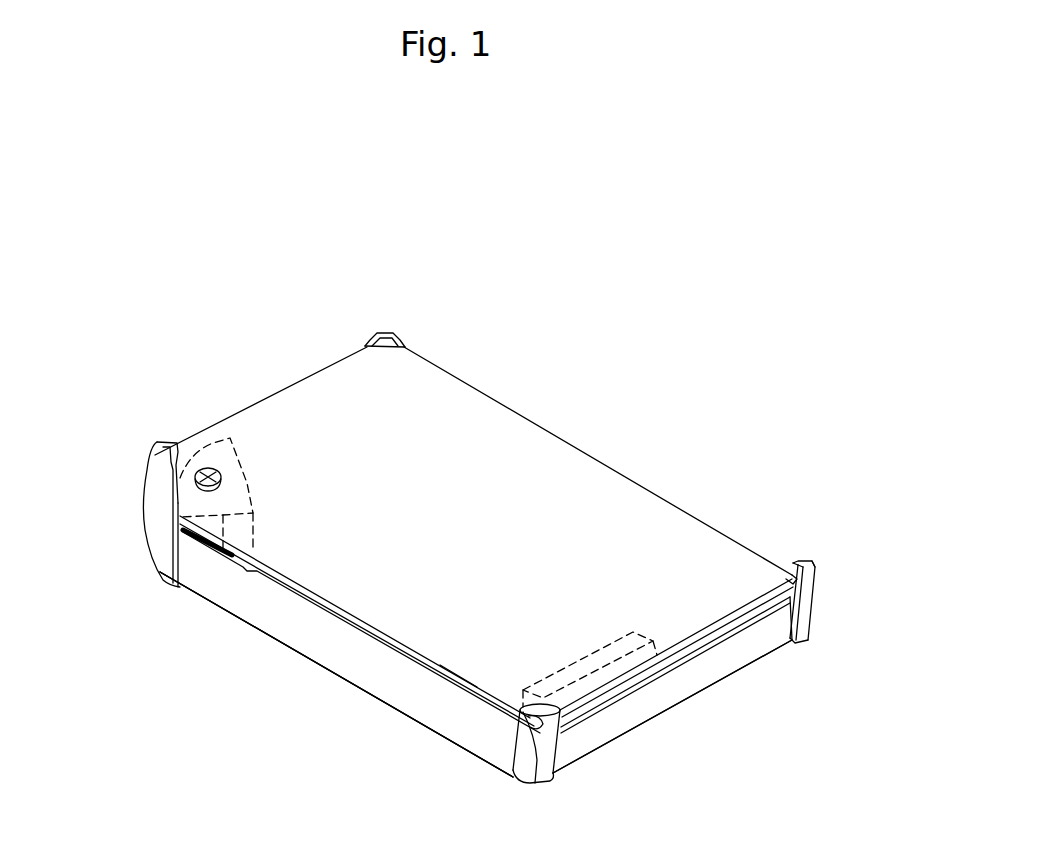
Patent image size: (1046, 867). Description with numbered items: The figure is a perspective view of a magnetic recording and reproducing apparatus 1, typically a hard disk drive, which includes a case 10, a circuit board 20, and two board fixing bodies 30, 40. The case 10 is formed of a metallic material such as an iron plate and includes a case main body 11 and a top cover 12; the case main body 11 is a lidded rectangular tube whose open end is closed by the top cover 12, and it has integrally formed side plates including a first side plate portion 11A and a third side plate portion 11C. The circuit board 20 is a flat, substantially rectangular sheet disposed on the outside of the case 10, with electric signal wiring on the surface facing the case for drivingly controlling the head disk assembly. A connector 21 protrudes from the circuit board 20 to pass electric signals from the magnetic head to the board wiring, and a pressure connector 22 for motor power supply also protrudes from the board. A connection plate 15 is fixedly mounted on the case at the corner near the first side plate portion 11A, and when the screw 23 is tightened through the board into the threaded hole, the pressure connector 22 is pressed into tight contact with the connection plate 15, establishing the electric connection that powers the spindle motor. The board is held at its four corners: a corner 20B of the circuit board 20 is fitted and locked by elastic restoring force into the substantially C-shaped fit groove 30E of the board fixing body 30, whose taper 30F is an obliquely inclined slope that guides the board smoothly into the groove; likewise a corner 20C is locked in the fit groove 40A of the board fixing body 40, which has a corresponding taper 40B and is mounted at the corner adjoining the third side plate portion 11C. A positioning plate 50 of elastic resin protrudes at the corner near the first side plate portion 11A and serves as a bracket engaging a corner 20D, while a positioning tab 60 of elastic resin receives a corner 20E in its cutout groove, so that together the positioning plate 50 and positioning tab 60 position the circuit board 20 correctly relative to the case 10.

The magnetic recording and reproducing apparatus 1 is at (556, 347).
The case 10 is at (652, 724).
The case main body 11 is at (288, 630).
The first side plate portion 11A is at (337, 648).
The third side plate portion 11C is at (623, 713).
The top cover 12 is at (735, 680).
The connection plate 15 is at (213, 553).
The circuit board 20 is at (523, 431).
The corner 20B is at (517, 732).
The corner 20C is at (768, 563).
The corner 20D is at (167, 460).
The corner 20E is at (385, 350).
The connector 21 is at (600, 705).
The pressure connector 22 is at (242, 463).
The screw 23 is at (207, 465).
The board fixing body 30 is at (520, 788).
The fit groove 30E is at (534, 780).
The taper 30F is at (477, 702).
The board fixing body 40 is at (800, 644).
The fit groove 40A is at (813, 591).
The taper 40B is at (794, 568).
The positioning plate 50 is at (150, 533).
The positioning tab 60 is at (371, 343).